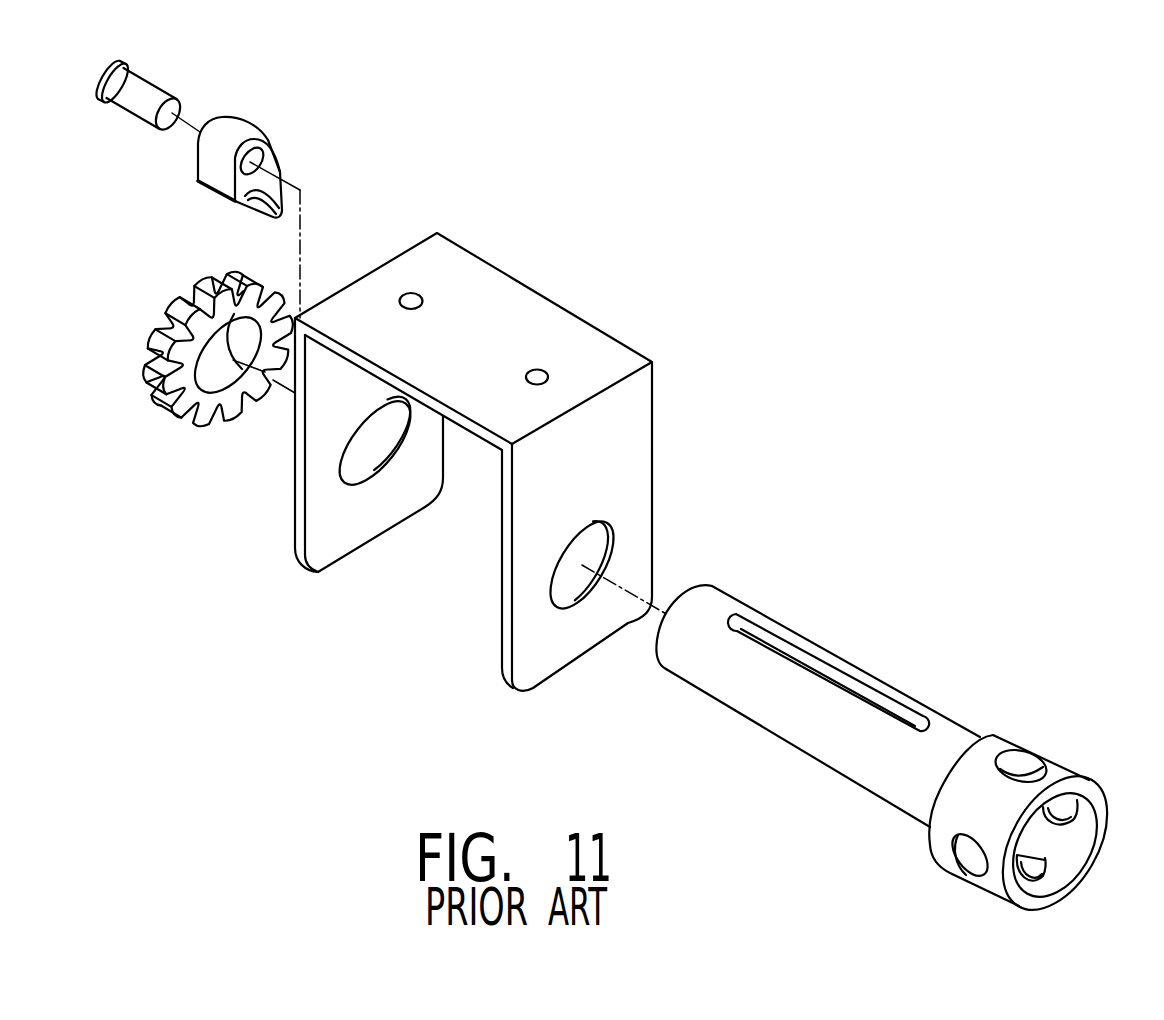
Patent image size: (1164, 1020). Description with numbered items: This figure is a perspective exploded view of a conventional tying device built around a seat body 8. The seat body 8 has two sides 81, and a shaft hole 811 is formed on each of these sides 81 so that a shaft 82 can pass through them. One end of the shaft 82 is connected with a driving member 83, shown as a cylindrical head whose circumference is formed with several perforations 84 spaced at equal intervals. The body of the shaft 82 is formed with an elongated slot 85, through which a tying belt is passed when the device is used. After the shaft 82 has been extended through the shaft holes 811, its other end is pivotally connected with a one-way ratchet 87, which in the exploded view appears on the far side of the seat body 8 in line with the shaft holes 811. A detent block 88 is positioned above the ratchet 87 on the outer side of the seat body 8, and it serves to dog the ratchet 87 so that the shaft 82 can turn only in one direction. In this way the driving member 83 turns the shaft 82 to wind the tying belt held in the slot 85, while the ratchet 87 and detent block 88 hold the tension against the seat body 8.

The seat body 8 is at (532, 458).
The sides 81 is at (635, 526).
The shaft holes 811 is at (593, 550).
The shaft 82 is at (838, 695).
The driving member 83 is at (1043, 797).
The perforations 84 is at (1027, 766).
The slot 85 is at (842, 684).
The one-way ratchet 87 is at (217, 432).
The detent block 88 is at (283, 166).